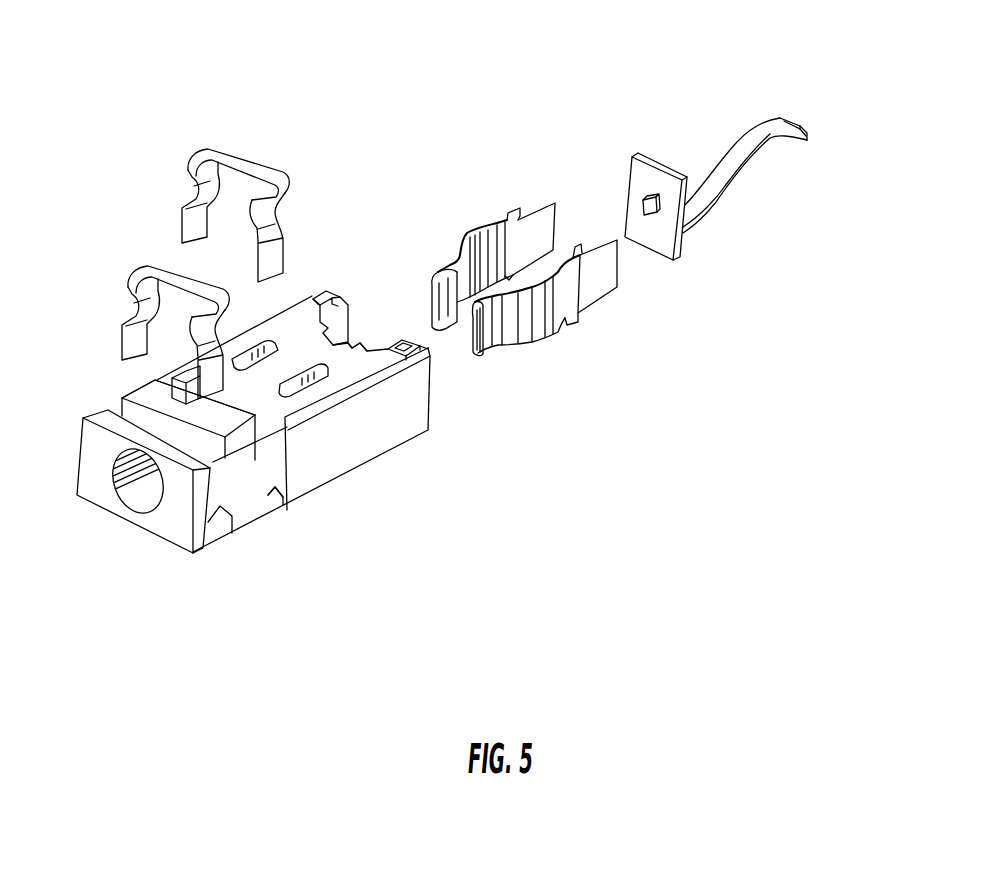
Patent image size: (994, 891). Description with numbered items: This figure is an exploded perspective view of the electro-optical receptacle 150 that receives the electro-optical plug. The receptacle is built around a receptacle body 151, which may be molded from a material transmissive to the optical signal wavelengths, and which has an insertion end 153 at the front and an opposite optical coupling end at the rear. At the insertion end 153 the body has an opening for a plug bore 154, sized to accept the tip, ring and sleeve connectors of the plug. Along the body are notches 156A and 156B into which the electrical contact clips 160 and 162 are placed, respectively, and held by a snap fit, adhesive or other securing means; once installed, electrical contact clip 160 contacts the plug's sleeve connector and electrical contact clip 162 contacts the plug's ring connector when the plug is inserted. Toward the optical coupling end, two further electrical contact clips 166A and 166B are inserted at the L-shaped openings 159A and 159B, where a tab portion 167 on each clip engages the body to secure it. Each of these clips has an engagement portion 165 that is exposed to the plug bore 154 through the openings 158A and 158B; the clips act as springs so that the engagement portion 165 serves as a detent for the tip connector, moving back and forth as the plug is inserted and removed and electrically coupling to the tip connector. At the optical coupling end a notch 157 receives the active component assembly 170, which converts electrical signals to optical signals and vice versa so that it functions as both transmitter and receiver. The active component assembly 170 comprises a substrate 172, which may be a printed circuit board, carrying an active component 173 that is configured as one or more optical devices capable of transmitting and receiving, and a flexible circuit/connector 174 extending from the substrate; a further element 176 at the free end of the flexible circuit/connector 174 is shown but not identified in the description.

The electro-optical receptacle 150 is at (547, 562).
The receptacle body 151 is at (333, 452).
The insertion end 153 is at (165, 522).
The plug bore 154 is at (137, 494).
The notch 156A is at (105, 400).
The notch 156B is at (275, 497).
The notch 157 is at (362, 324).
The opening 158A is at (317, 376).
The opening 158B is at (250, 342).
The opening 159A is at (428, 347).
The opening 159B is at (330, 298).
The electrical contact clip 160 is at (142, 273).
The electrical contact clip 162 is at (214, 142).
The engagement portion 165 is at (437, 273).
The electrical contact clip 166A is at (595, 293).
The electrical contact clip 166B is at (492, 228).
The tab portion 167 is at (515, 212).
The active component assembly 170 is at (635, 90).
The substrate 172 is at (670, 163).
The active component 173 is at (643, 203).
The flexible circuit/connector 174 is at (740, 182).
The arm tip 176 is at (804, 126).